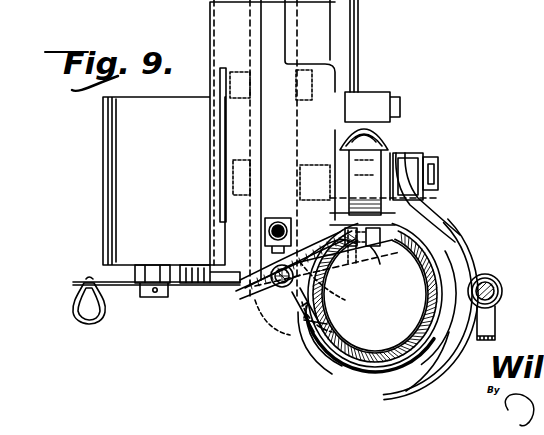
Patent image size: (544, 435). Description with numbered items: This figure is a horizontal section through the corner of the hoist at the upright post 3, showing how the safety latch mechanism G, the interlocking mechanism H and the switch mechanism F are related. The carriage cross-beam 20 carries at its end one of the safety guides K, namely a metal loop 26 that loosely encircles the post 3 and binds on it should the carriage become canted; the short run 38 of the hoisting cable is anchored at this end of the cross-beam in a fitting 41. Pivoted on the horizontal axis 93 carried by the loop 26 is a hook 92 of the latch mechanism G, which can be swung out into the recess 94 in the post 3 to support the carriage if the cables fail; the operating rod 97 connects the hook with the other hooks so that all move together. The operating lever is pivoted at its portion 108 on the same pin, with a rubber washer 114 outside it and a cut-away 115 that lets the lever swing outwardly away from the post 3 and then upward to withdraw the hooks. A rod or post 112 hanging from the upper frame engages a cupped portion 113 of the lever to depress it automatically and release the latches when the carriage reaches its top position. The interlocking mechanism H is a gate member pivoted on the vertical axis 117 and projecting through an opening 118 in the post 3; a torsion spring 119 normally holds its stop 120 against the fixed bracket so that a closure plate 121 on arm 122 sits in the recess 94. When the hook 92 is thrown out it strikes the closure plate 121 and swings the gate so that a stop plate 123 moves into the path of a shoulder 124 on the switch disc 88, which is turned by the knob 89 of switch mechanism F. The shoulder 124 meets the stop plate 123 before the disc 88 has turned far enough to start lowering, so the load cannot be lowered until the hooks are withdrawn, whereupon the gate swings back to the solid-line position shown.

The cross-beam 20 is at (214, 15).
The operating rod 97 is at (358, 22).
The hook 92 is at (380, 135).
The rubber washer 114 is at (400, 195).
The pivoted portion of operating lever 108 is at (392, 168).
The cut-away portion 115 is at (425, 176).
The horizontal axis 93 is at (435, 168).
The safety latch mechanism G is at (432, 210).
The slot or recess 94 is at (434, 230).
The upright post 3 is at (378, 362).
The safety guides K is at (422, 370).
The metal loop 26 is at (433, 362).
The interlocking mechanism H is at (332, 266).
The stop 120 is at (356, 252).
The arm of gate member 122 is at (364, 250).
The closure plate 121 is at (388, 252).
The short run of cable 38 is at (290, 221).
The fitting 41 is at (287, 232).
The vertical pivot axis 117 is at (278, 298).
The torsion spring 119 is at (290, 302).
The shoulder 124 is at (272, 284).
The stop plate 123 is at (262, 293).
The opening 118 is at (302, 332).
The switch disc 88 is at (74, 283).
The handle or knob 89 is at (80, 313).
The switch mechanism F is at (91, 262).
The cupped portion 113 is at (493, 278).
The rod or post 112 is at (497, 288).